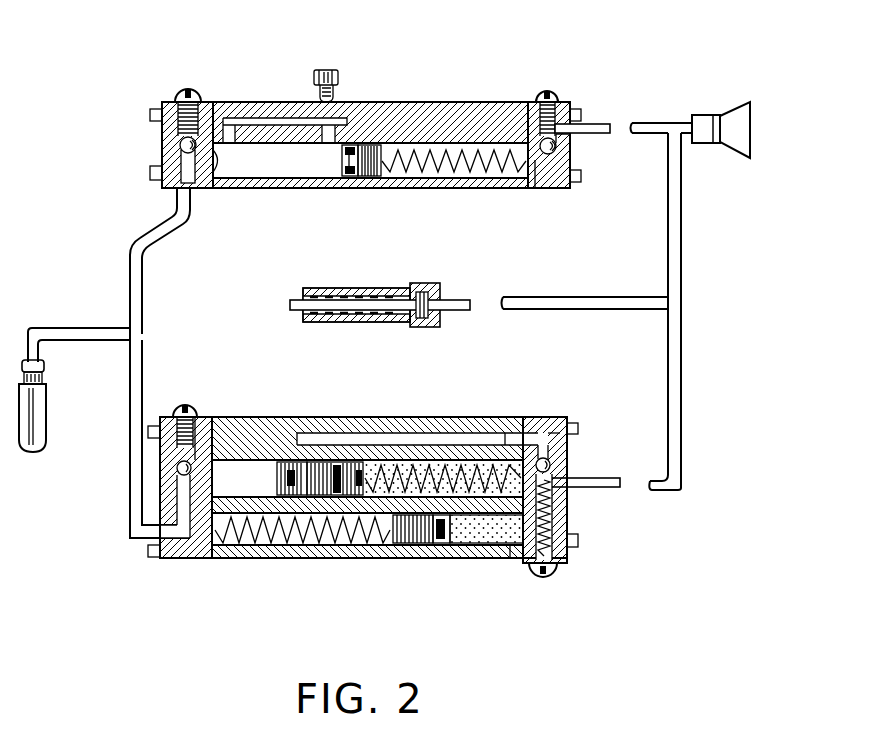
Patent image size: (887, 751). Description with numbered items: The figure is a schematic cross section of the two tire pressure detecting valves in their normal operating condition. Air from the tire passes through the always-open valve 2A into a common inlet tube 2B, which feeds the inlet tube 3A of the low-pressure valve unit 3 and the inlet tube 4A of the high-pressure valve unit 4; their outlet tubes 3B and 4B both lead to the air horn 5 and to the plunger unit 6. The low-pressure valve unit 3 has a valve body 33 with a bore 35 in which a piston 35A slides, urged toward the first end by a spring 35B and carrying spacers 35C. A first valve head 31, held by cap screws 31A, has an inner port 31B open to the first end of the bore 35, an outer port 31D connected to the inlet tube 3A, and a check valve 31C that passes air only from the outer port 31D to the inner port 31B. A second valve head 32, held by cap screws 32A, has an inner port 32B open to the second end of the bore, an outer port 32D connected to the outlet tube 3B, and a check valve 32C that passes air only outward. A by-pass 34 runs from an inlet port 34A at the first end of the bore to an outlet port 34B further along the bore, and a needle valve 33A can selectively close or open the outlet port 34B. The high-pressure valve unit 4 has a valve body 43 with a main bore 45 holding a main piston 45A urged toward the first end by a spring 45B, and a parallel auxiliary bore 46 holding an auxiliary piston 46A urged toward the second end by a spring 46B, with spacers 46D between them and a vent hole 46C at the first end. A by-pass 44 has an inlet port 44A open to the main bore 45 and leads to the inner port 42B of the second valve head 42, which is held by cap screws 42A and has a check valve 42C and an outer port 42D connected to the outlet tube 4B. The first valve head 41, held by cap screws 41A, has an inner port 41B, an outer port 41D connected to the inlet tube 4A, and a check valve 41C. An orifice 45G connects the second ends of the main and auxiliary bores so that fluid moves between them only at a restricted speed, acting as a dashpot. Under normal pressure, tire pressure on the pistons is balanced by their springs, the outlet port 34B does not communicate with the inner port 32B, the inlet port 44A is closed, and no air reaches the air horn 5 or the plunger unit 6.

The valve 2A is at (46, 400).
The common inlet tube 2B is at (82, 328).
The low-pressure valve unit 3 is at (455, 96).
The inlet tube 3A is at (130, 268).
The outlet tube 3B is at (620, 127).
The high-pressure valve unit 4 is at (296, 570).
The inlet tube 4A is at (128, 412).
The outlet tube 4B is at (575, 480).
The air horn 5 is at (748, 103).
The plunger unit 6 is at (452, 285).
The first valve head 31 is at (163, 100).
The cap screws 31A is at (152, 113).
The inner port 31B is at (220, 162).
The check valve 31C is at (178, 146).
The outer port 31D is at (175, 195).
The second valve head 32 is at (578, 100).
The cap screws 32A is at (583, 113).
The inner port 32B is at (545, 190).
The check valve 32C is at (563, 150).
The outer port 32D is at (575, 140).
The valve body 33 is at (398, 102).
The needle valve 33A is at (322, 70).
The by-pass 34 is at (272, 118).
The inlet port 34A is at (226, 128).
The outlet port 34B is at (340, 128).
The bore 35 is at (277, 160).
The piston 35A is at (353, 183).
The spacers 35C is at (370, 183).
The spring 35B is at (455, 175).
The first valve head 41 is at (170, 415).
The cap screws 41A is at (160, 432).
The inner port 41B is at (208, 417).
The check valve 41C is at (178, 468).
The outer port 41D is at (160, 527).
The second valve head 42 is at (572, 510).
The cap screws 42A is at (578, 540).
The inner port 42B is at (512, 418).
The check valve 42C is at (560, 430).
The outer port 42D is at (552, 465).
The valve body 43 is at (325, 560).
The by-pass 44 is at (447, 470).
The inlet port 44A is at (302, 440).
The main bore 45 is at (247, 477).
The main piston 45A is at (337, 470).
The spring 45B is at (392, 470).
The orifice 45G is at (508, 557).
The auxiliary bore 46 is at (480, 550).
The auxiliary piston 46A is at (440, 560).
The spring 46B is at (265, 550).
The vent hole 46C is at (213, 560).
The spacers 46D is at (398, 545).